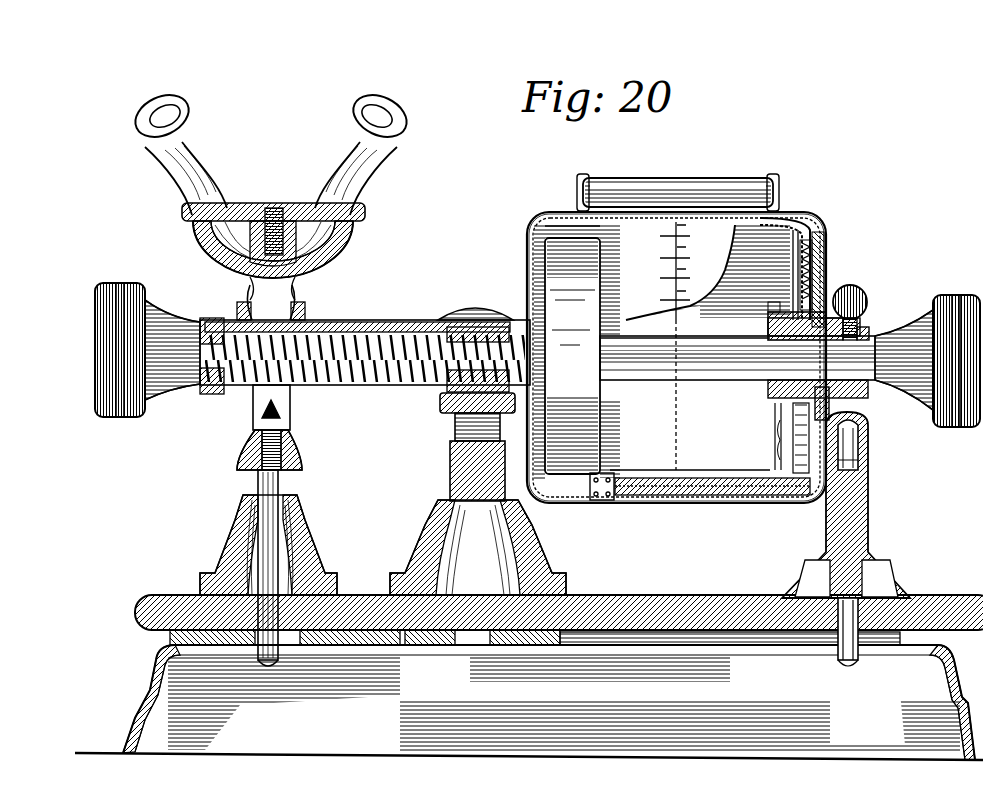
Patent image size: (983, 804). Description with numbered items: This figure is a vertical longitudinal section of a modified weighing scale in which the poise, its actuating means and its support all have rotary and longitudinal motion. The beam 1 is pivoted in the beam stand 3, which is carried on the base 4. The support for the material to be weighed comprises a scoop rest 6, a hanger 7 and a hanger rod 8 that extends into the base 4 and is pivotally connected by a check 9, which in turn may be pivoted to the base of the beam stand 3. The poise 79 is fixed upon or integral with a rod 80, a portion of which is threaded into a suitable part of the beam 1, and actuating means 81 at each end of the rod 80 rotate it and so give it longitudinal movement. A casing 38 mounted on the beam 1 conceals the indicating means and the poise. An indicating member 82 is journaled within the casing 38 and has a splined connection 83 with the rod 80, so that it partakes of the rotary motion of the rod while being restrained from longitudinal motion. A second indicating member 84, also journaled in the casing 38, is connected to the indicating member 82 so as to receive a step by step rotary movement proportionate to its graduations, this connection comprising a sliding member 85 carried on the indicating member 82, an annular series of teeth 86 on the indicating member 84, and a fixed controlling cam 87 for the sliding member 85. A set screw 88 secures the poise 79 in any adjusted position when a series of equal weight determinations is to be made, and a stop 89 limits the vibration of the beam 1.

The beam 1 is at (866, 332).
The beam stand 3 is at (448, 452).
The base 4 is at (612, 608).
The scoop rest 6 is at (318, 170).
The hanger 7 is at (262, 404).
The hanger rod 8 is at (256, 474).
The check 9 is at (378, 655).
The casing 38 is at (572, 500).
The poise 79 is at (572, 356).
The rod 80 is at (360, 318).
The actuating means 81 is at (97, 400).
The indicating member 82 is at (800, 212).
The splined connection 83 is at (820, 330).
The second indicating member 84 is at (778, 214).
The sliding member 85 is at (822, 292).
The annular series of teeth 86 is at (822, 240).
The controlling cam 87 is at (822, 330).
The set screw 88 is at (865, 290).
The stop 89 is at (867, 457).